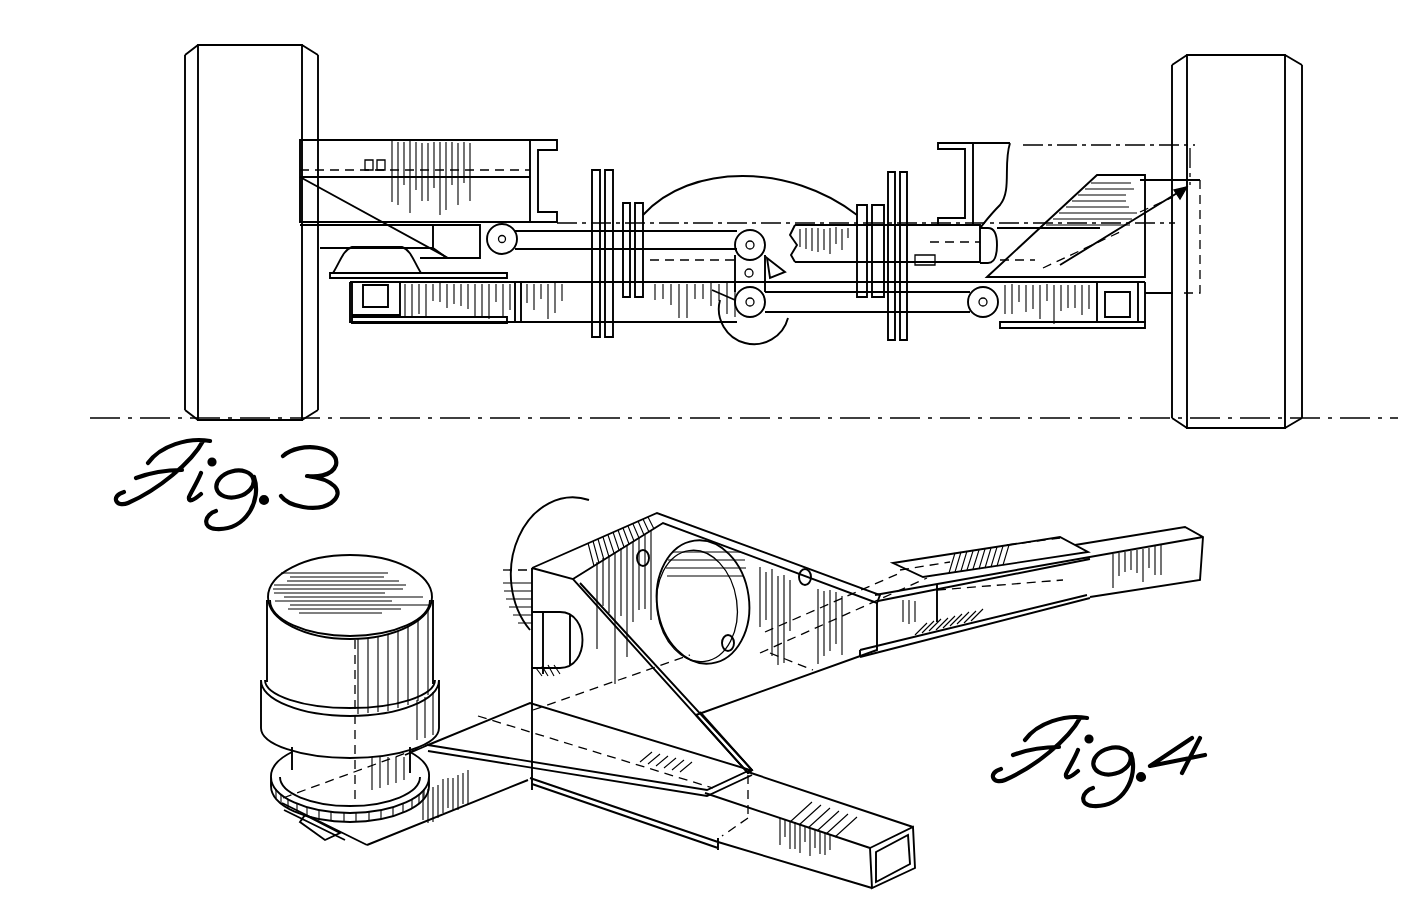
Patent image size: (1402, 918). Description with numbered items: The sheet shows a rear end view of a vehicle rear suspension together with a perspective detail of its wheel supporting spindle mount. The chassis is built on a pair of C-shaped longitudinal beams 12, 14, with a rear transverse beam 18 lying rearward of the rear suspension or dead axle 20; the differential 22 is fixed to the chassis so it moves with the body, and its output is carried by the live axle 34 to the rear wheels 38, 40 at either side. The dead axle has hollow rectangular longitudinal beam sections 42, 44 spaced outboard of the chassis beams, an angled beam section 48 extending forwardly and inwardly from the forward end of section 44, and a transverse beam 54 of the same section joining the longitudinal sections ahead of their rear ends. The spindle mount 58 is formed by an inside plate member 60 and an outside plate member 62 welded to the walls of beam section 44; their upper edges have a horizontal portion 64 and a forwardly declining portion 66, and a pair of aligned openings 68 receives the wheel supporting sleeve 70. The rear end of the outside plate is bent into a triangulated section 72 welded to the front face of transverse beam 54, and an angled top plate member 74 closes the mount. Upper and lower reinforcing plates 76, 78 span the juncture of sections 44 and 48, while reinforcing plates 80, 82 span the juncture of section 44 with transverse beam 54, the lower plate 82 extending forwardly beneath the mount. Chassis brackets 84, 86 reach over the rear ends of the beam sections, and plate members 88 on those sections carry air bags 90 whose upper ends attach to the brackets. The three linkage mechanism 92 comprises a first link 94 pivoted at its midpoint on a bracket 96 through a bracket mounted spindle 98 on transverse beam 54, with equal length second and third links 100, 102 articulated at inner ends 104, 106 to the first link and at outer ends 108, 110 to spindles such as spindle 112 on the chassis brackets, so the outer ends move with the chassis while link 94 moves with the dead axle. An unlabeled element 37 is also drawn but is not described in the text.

In FIG. 3, the longitudinal beam 12 is at (550, 141).
In FIG. 3, the longitudinal beam 14 is at (950, 147).
In FIG. 3, the rear transverse beam 18 is at (805, 240).
In FIG. 3, the rear suspension 20 is at (567, 323).
In FIG. 3, the differential 22 is at (745, 173).
In FIG. 3, the live axle 34 is at (1013, 230).
In FIG. 3, the brake disc plates 37 is at (605, 175).
In FIG. 3, the rear wheel 38 is at (1270, 98).
In FIG. 3, the rear wheel 40 is at (208, 90).
In FIG. 3, the longitudinal beam section 42 is at (1115, 322).
In FIG. 3, the longitudinal beam section 44 is at (377, 313).
In FIG. 4, the longitudinal beam section 44 is at (470, 797).
In FIG. 4, the angled beam section 48 is at (1173, 567).
In FIG. 3, the transverse beam 54 is at (520, 286).
In FIG. 4, the transverse beam 54 is at (833, 808).
In FIG. 4, the spindle mount 58 is at (780, 548).
In FIG. 4, the inside plate member 60 is at (562, 637).
In FIG. 4, the outside plate member 62 is at (545, 655).
In FIG. 4, the horizontal portion 64 is at (643, 550).
In FIG. 4, the forwardly declining portion 66 is at (807, 570).
In FIG. 4, the opening 68 is at (735, 651).
In FIG. 3, the wheel supporting sleeve 70 is at (1160, 282).
In FIG. 4, the wheel supporting sleeve 70 is at (546, 532).
In FIG. 3, the triangulated section 72 is at (1105, 178).
In FIG. 4, the triangulated section 72 is at (730, 743).
In FIG. 4, the angled top plate member 74 is at (682, 519).
In FIG. 4, the upper reinforcing plate 76 is at (1003, 552).
In FIG. 4, the lower reinforcing plate 78 is at (1000, 610).
In FIG. 3, the upper reinforcing plate 80 is at (497, 280).
In FIG. 4, the upper reinforcing plate 80 is at (596, 775).
In FIG. 3, the lower reinforcing plate 82 is at (420, 323).
In FIG. 4, the lower reinforcing plate 82 is at (676, 832).
In FIG. 3, the chassis bracket 84 is at (1003, 155).
In FIG. 3, the chassis bracket 86 is at (405, 148).
In FIG. 3, the plate member 88 is at (333, 275).
In FIG. 4, the plate member 88 is at (276, 798).
In FIG. 3, the air bag 90 is at (328, 205).
In FIG. 4, the air bag 90 is at (280, 647).
In FIG. 3, the three linkage mechanism 92 is at (735, 300).
In FIG. 3, the first link 94 is at (718, 294).
In FIG. 3, the bracket 96 is at (698, 283).
In FIG. 3, the bracket mounted spindle 98 is at (776, 258).
In FIG. 3, the second link 100 is at (665, 237).
In FIG. 3, the third link 102 is at (845, 305).
In FIG. 3, the inner end 104 is at (750, 240).
In FIG. 3, the inner end 106 is at (745, 312).
In FIG. 3, the outer end 108 is at (496, 228).
In FIG. 3, the outer end 110 is at (990, 306).
In FIG. 3, the spindle 112 is at (487, 238).